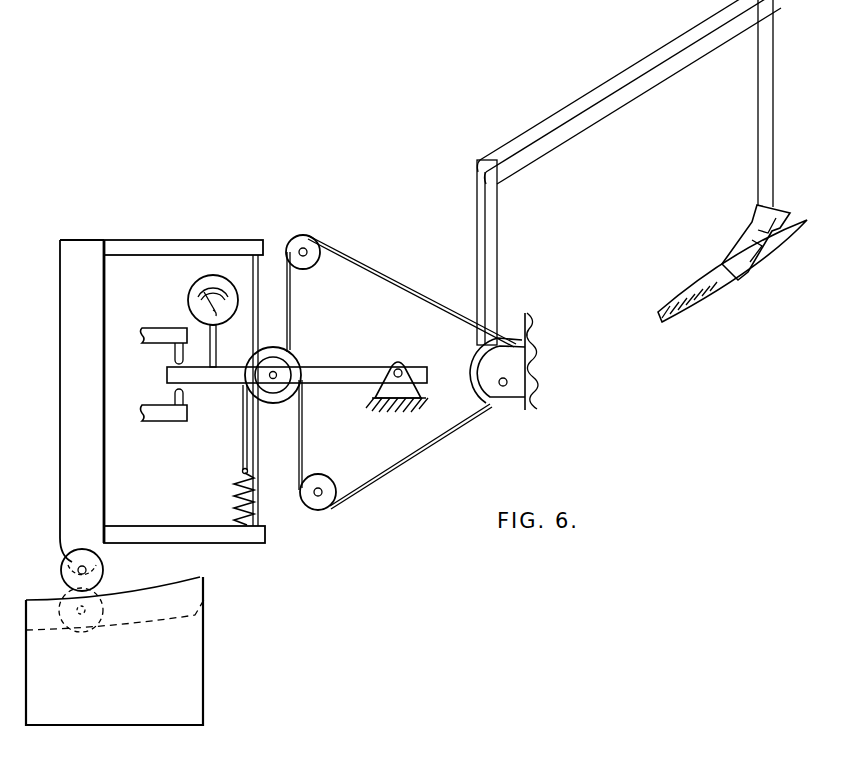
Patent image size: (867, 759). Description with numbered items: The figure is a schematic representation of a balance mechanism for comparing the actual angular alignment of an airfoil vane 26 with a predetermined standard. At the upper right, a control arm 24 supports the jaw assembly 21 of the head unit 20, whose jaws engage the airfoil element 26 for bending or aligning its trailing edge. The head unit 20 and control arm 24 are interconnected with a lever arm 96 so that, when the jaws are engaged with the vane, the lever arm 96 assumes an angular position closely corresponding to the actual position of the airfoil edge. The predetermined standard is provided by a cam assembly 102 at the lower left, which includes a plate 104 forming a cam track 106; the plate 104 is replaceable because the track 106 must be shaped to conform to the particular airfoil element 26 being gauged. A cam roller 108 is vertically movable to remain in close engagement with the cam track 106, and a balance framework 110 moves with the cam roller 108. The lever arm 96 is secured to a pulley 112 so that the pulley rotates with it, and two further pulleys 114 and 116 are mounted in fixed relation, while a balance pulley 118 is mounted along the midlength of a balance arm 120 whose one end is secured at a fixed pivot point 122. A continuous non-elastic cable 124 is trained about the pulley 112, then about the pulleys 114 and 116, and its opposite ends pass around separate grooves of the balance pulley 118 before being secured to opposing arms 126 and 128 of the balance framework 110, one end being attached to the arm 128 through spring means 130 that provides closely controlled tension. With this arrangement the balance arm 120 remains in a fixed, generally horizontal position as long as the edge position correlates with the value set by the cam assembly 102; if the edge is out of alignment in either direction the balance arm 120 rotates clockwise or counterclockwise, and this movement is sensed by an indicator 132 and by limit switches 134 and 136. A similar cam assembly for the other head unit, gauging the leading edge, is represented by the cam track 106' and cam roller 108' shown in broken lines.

The head unit 20 is at (799, 172).
The jaw assembly 21 is at (721, 238).
The control arm 24 is at (622, 85).
The airfoil vane 26 is at (700, 318).
The lever arm 96 is at (499, 240).
The cam assembly 102 is at (225, 637).
The plate 104 is at (214, 678).
The cam track 106 is at (146, 578).
The cam track 106' is at (152, 607).
The cam roller 108 is at (56, 567).
The cam roller 108' is at (56, 598).
The balance framework 110 is at (62, 384).
The pulley 112 is at (476, 366).
The pulley 114 is at (312, 248).
The pulley 116 is at (330, 484).
The balance pulley 118 is at (297, 362).
The balance arm 120 is at (370, 366).
The fixed pivot point 122 is at (380, 391).
The cable 124 is at (405, 298).
The arm 126 is at (213, 240).
The arm 128 is at (171, 535).
The spring means 130 is at (232, 480).
The indicator 132 is at (194, 284).
The limit switch 134 is at (172, 349).
The limit switch 136 is at (172, 395).